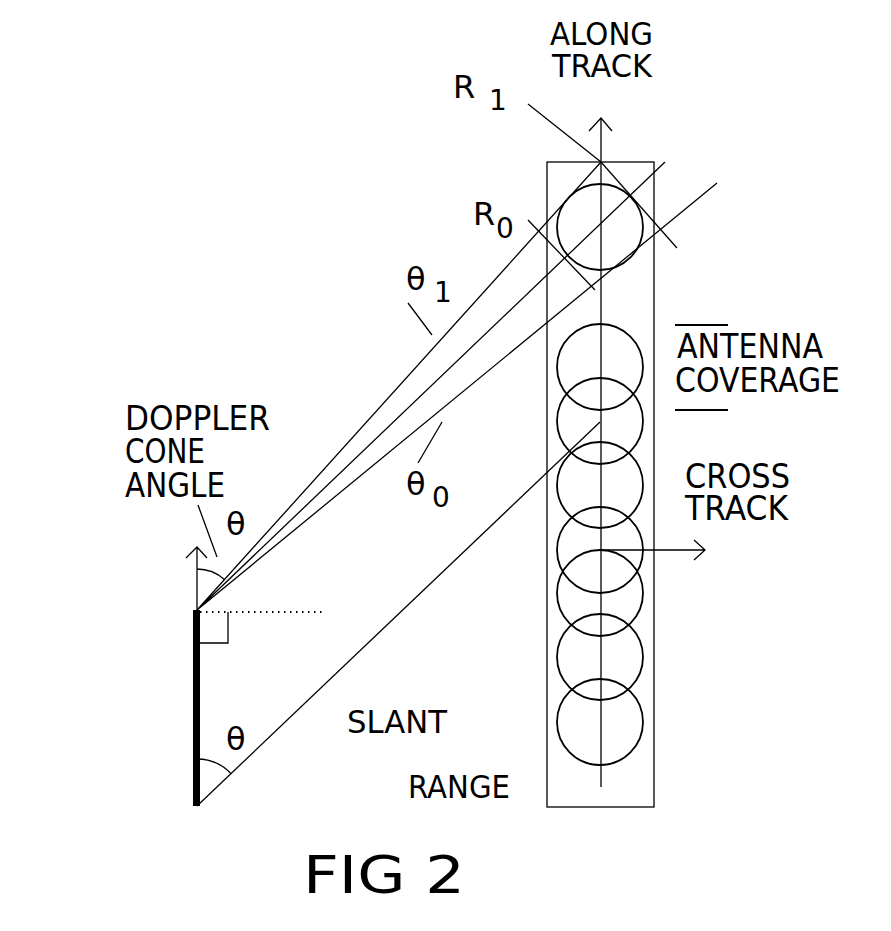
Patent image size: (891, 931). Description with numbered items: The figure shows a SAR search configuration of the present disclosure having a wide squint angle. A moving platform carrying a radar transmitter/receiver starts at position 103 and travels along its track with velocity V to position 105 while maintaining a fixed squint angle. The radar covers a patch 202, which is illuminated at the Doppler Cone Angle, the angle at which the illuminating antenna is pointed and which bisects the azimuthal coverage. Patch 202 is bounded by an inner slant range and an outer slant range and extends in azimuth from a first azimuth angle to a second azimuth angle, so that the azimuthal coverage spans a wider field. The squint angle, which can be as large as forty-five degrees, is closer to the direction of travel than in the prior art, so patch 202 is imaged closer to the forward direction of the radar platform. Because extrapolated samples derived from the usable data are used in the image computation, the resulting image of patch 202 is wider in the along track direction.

The position 103 is at (174, 712).
The position 105 is at (220, 595).
The patch 202 is at (648, 227).